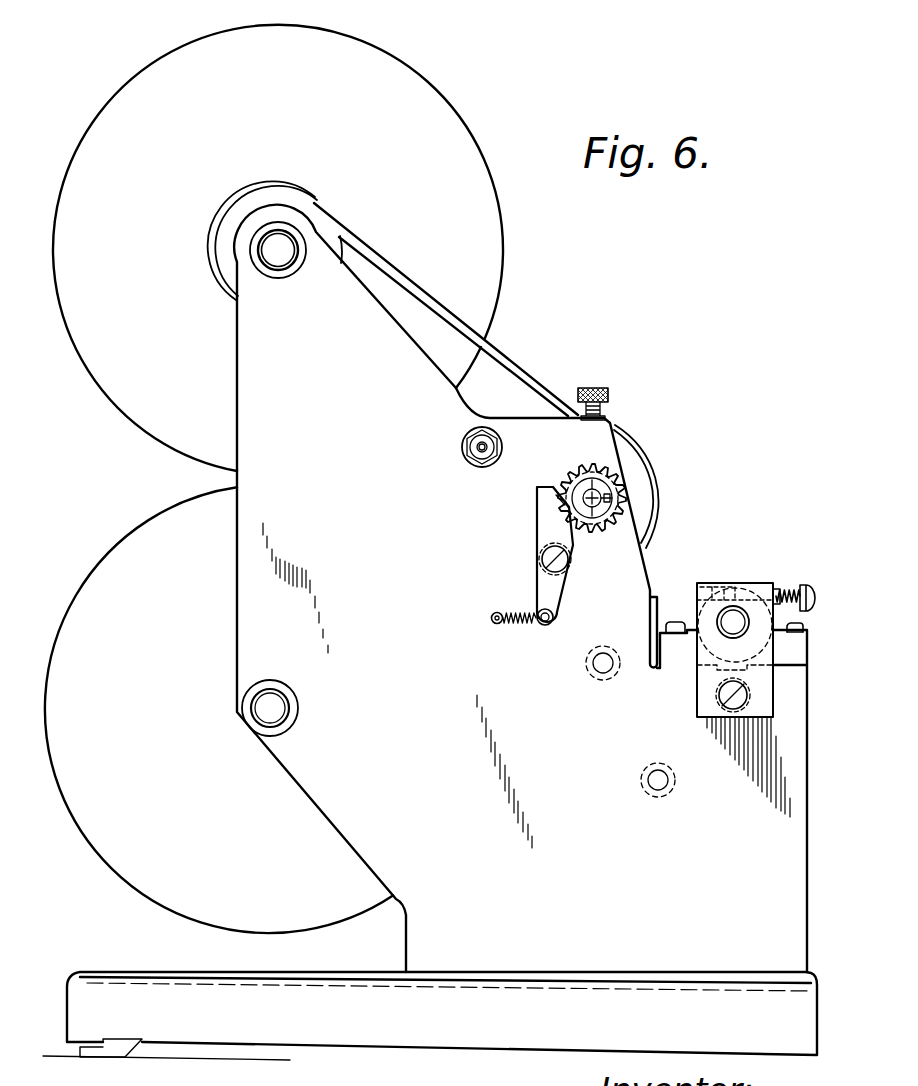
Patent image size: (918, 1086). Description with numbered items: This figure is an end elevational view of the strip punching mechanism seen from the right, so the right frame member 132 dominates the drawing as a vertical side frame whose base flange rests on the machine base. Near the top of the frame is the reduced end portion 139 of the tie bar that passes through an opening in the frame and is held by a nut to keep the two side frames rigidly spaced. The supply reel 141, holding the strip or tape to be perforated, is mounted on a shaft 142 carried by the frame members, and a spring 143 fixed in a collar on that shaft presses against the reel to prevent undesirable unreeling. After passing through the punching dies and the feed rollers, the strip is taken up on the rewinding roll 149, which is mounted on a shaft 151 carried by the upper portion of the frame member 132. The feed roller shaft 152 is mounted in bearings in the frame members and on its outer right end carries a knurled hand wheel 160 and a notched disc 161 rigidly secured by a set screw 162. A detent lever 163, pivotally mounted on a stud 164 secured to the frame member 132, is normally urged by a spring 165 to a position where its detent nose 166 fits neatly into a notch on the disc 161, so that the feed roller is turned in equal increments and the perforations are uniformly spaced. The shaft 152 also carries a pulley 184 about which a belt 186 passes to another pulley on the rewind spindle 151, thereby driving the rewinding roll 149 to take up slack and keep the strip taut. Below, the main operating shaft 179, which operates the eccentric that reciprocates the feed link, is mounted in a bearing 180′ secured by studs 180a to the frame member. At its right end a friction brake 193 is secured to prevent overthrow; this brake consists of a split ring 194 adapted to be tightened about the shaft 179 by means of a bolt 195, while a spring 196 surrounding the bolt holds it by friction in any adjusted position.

The right frame member 132 is at (398, 916).
The reduced end portion 139 is at (482, 460).
The supply reel 141 is at (115, 548).
The shaft 142 is at (287, 717).
The spring 143 is at (500, 444).
The rewinding roll 149 is at (488, 252).
The shaft 151 is at (279, 262).
The shaft 152 is at (628, 522).
The knurled hand wheel 160 is at (594, 464).
The notched disc 161 is at (582, 530).
The set screw 162 is at (630, 498).
The detent lever 163 is at (535, 530).
The stud 164 is at (540, 559).
The spring 165 is at (526, 620).
The detent nose 166 is at (556, 507).
The main operating shaft 179 is at (732, 630).
The bearing 180′ is at (795, 624).
The studs 180a is at (808, 632).
The pulley 184 is at (655, 487).
The belt 186 is at (548, 382).
The friction brake 193 is at (727, 576).
The split ring 194 is at (758, 585).
The bolt 195 is at (820, 581).
The spring 196 is at (795, 578).